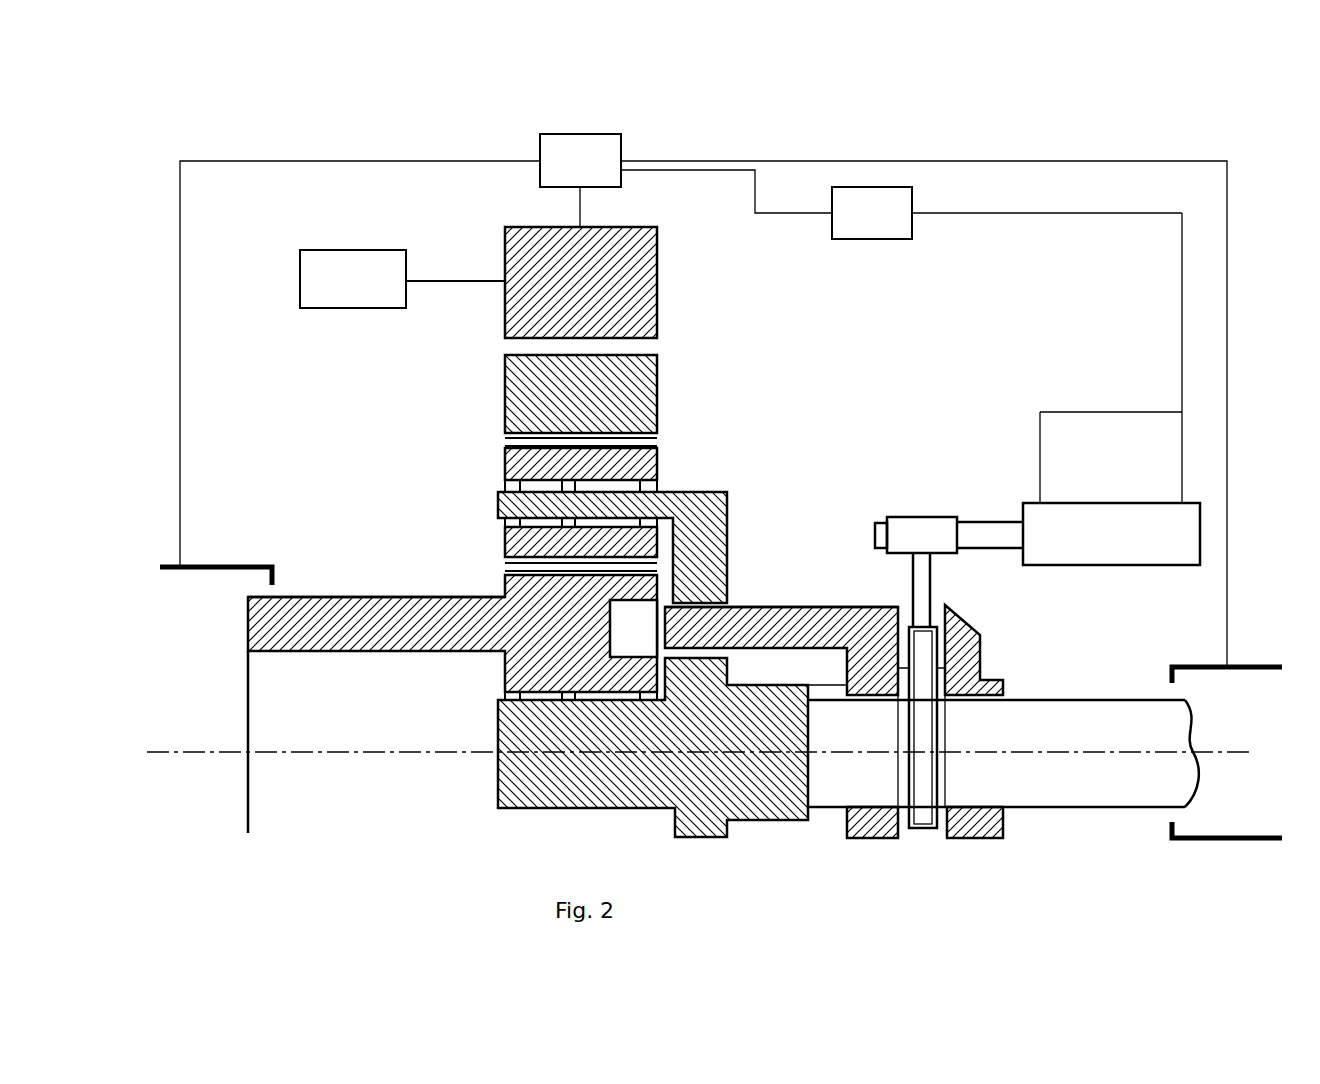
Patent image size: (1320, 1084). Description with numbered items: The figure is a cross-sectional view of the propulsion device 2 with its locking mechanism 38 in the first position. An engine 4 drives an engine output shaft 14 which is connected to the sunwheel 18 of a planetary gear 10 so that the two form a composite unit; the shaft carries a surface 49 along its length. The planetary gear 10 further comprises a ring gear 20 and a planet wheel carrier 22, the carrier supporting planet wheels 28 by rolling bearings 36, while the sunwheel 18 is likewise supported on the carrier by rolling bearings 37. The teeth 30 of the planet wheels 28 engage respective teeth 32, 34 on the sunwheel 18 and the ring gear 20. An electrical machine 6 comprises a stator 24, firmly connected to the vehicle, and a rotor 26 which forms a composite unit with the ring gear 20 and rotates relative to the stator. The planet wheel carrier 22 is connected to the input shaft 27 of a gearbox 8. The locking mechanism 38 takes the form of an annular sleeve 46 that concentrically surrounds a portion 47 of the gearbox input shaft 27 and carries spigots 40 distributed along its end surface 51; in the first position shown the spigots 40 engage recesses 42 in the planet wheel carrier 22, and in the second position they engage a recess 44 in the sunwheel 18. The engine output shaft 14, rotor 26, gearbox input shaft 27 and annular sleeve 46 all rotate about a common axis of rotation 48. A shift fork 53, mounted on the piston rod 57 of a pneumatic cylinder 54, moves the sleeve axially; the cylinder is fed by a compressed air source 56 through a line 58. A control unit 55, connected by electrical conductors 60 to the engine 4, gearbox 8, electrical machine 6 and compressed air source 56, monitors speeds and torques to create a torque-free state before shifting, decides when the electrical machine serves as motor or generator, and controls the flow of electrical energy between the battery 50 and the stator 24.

The propulsion device 2 is at (957, 398).
The engine 4 is at (168, 565).
The electrical machine 6 is at (690, 278).
The gearbox 8 is at (1258, 665).
The planetary gear 10 is at (782, 398).
The engine output shaft 14 is at (320, 597).
The sunwheel 18 is at (433, 652).
The ring gear 20 is at (660, 388).
The planet wheel carrier 22 is at (730, 510).
The stator 24 is at (620, 228).
The rotor 26 is at (660, 352).
The gearbox input shaft 27 is at (1195, 742).
The planet wheels 28 is at (660, 470).
The teeth of the planet wheels 30 is at (662, 448).
The teeth of the sunwheel 32 is at (505, 560).
The teeth of the ring gear 34 is at (660, 438).
The rolling bearings 36 is at (660, 486).
The rolling bearings 37 is at (512, 710).
The locking mechanism 38 is at (862, 500).
The spigot 40 is at (826, 605).
The recess in the planet wheel carrier 42 is at (728, 603).
The recess in the sunwheel 44 is at (655, 605).
The annular sleeve 46 is at (868, 605).
The portion of the gearbox input shaft 47 is at (977, 800).
The common axis of rotation 48 is at (225, 757).
The shaft surface 49 is at (385, 597).
The battery 50 is at (300, 262).
The end surface of the annular sleeve 51 is at (840, 670).
The shift fork 53 is at (937, 743).
The pneumatic cylinder 54 is at (1155, 565).
The control unit 55 is at (625, 135).
The compressed air source 56 is at (832, 239).
The piston rod 57 is at (983, 520).
The line 58 is at (1182, 325).
The electrical conductors 60 is at (320, 160).